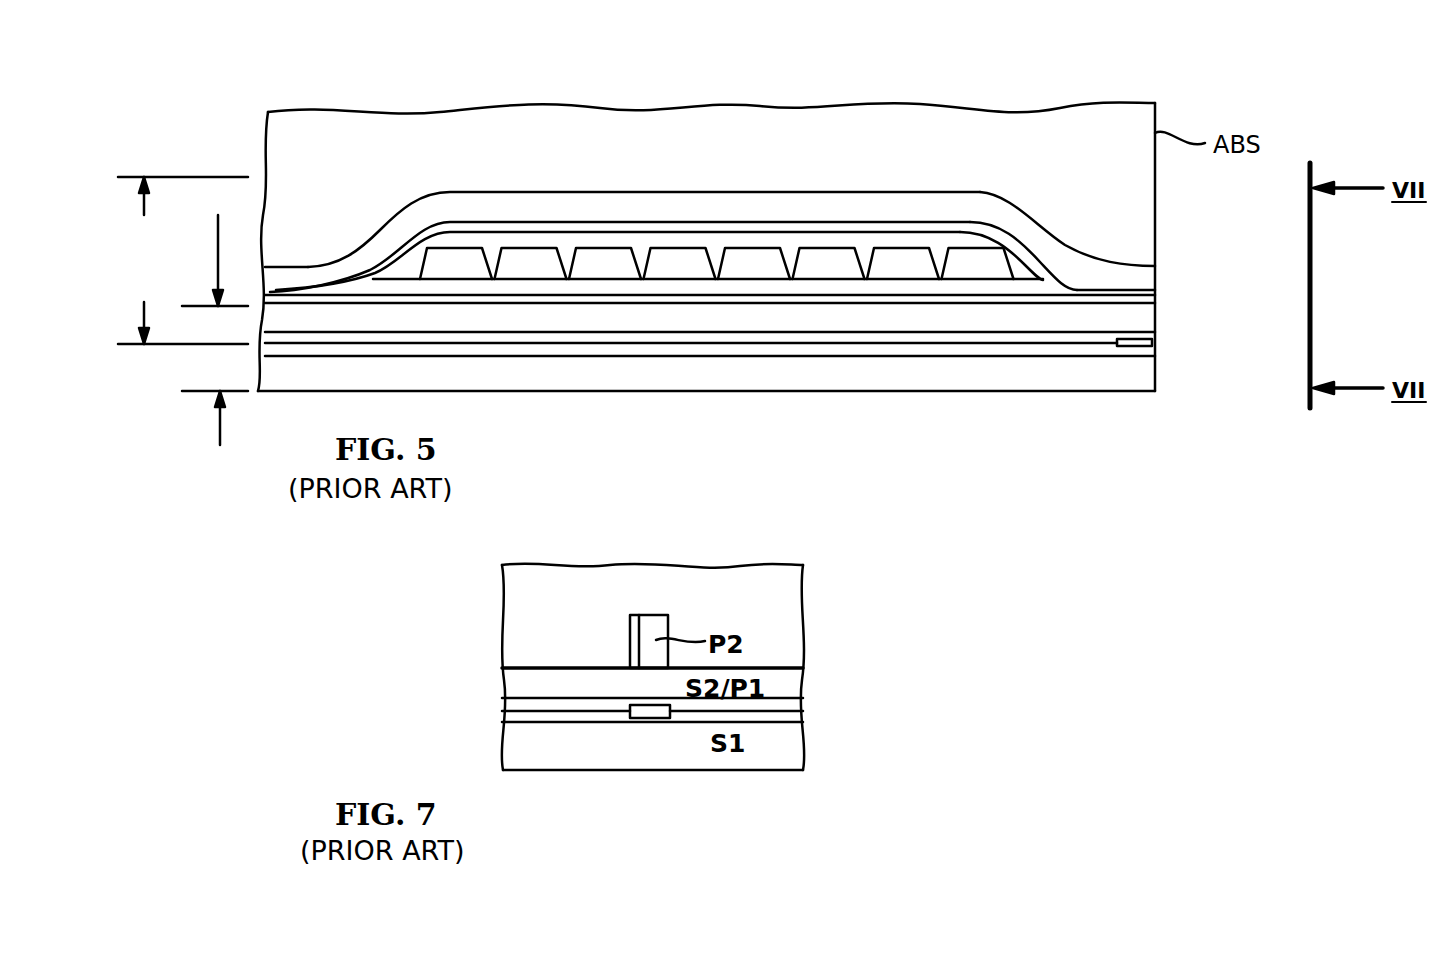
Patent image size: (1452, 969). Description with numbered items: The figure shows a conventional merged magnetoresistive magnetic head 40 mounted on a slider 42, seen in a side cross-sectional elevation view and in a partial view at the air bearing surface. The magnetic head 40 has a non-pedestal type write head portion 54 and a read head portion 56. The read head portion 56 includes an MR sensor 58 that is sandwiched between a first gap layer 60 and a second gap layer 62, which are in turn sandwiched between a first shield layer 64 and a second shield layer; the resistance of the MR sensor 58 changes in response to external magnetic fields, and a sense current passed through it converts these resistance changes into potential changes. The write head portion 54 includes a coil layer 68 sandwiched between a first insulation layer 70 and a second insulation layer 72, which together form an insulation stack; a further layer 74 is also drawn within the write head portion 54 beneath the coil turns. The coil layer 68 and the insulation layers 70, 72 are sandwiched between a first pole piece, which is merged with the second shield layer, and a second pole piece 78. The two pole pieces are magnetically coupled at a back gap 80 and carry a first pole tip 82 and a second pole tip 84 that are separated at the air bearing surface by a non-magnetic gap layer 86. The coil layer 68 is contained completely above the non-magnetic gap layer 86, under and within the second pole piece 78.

In FIG. 5, the magnetic head 40 is at (246, 90).
In FIG. 7, the magnetic head 40 is at (836, 573).
In FIG. 5, the slider 42 is at (347, 140).
In FIG. 7, the slider 42 is at (510, 589).
In FIG. 5, the write head portion 54 is at (177, 241).
In FIG. 5, the read head portion 56 is at (183, 421).
In FIG. 5, the MR sensor 58 is at (1152, 343).
In FIG. 7, the MR sensor 58 is at (653, 718).
In FIG. 5, the first gap layer 60 is at (713, 357).
In FIG. 7, the first gap layer 60 is at (540, 725).
In FIG. 5, the second gap layer 62 is at (645, 333).
In FIG. 7, the second gap layer 62 is at (770, 707).
In FIG. 5, the first shield layer 64 is at (848, 372).
In FIG. 7, the first shield layer 64 is at (788, 748).
In FIG. 5, the coil layer 68 is at (680, 258).
In FIG. 5, the first insulation layer 70 is at (531, 290).
In FIG. 5, the second insulation layer 72 is at (1025, 272).
In FIG. 5, the insulation layer 74 is at (482, 228).
In FIG. 5, the second pole piece 78 is at (850, 210).
In FIG. 5, the back gap 80 is at (300, 264).
In FIG. 5, the first pole tip 82 is at (1155, 316).
In FIG. 5, the second pole tip 84 is at (1142, 281).
In FIG. 7, the second pole tip 84 is at (655, 623).
In FIG. 5, the non-magnetic gap layer 86 is at (1155, 297).
In FIG. 7, the non-magnetic gap layer 86 is at (641, 631).